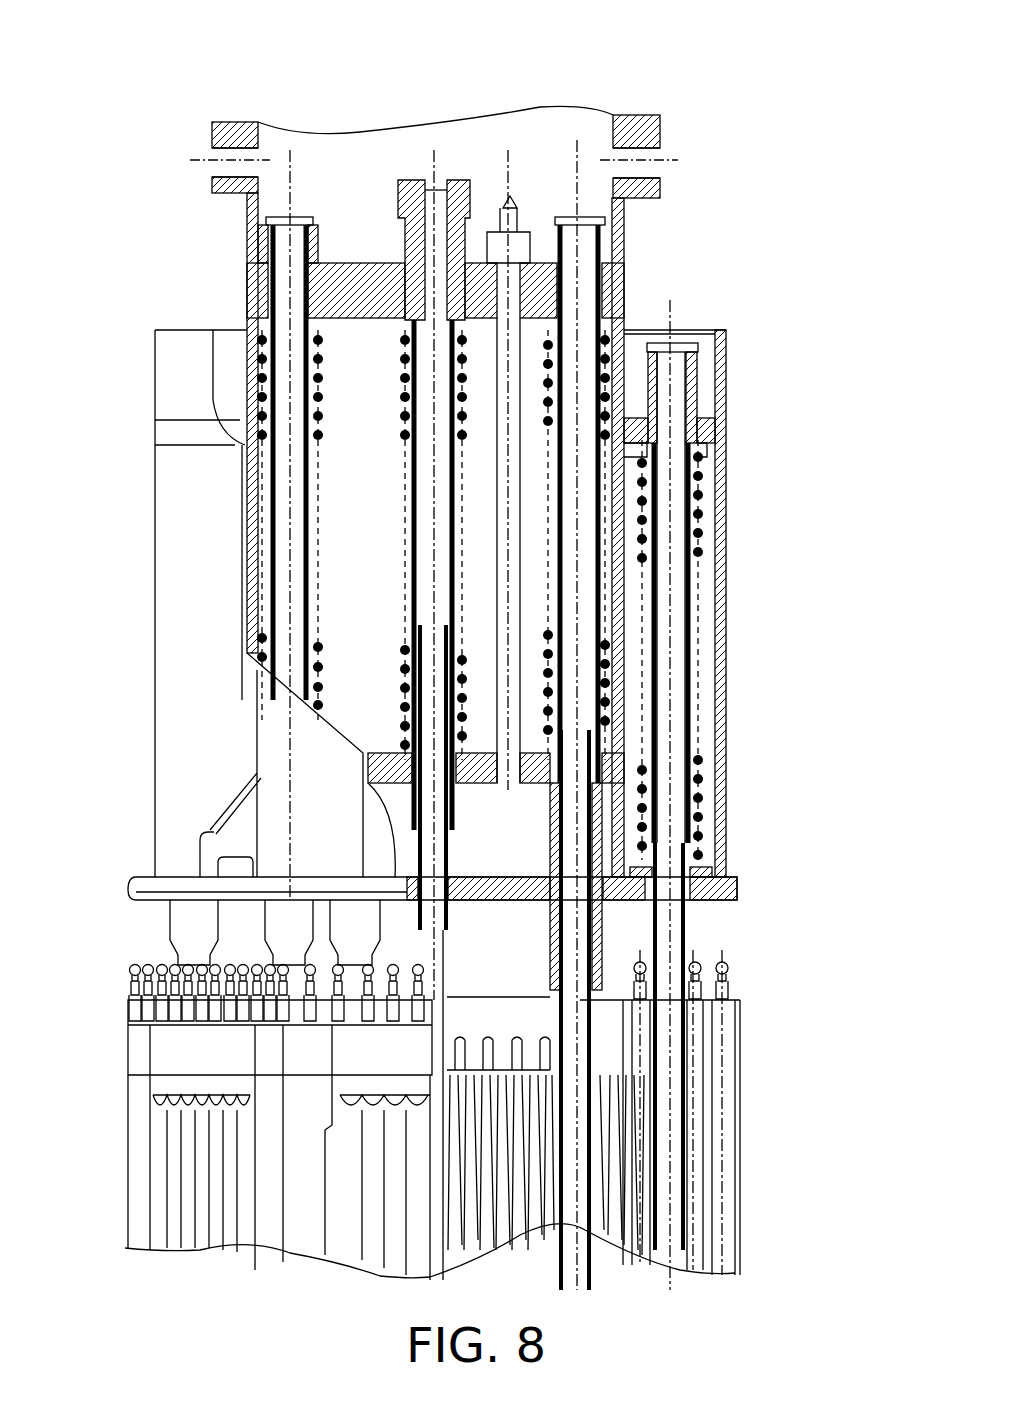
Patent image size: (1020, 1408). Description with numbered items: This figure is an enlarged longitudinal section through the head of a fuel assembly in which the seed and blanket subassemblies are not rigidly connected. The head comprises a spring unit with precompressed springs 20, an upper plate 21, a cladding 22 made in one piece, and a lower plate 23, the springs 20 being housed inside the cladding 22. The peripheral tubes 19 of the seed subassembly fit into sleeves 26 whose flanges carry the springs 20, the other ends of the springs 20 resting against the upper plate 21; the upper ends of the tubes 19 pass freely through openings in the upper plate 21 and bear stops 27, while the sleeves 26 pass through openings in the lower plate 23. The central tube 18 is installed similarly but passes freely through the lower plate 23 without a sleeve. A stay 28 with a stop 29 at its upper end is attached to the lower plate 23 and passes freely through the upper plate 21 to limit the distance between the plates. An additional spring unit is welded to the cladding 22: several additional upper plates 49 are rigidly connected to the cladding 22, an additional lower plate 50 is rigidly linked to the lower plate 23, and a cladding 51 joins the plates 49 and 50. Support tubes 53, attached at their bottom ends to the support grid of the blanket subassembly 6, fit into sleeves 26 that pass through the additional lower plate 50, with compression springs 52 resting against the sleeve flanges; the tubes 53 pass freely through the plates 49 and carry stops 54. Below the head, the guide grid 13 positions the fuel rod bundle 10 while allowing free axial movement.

The blanket subassembly 6 is at (722, 1180).
The fuel rod bundle 10 is at (602, 1112).
The guide grid 13 is at (527, 1033).
The central tube 18 is at (437, 545).
The peripheral tubes 19 is at (580, 483).
The precompressed springs 20 is at (262, 373).
The upper plate 21 is at (532, 288).
The cladding 22 is at (247, 538).
The lower plate 23 is at (388, 775).
The sleeves 26 is at (705, 868).
The stops 27 is at (313, 221).
The stay 28 is at (500, 262).
The stop 29 is at (512, 292).
The additional upper plates 49 is at (707, 423).
The additional lower plate 50 is at (718, 878).
The cladding 51 is at (716, 488).
The compression springs 52 is at (700, 549).
The support tubes 53 is at (668, 622).
The stops 54 is at (693, 362).